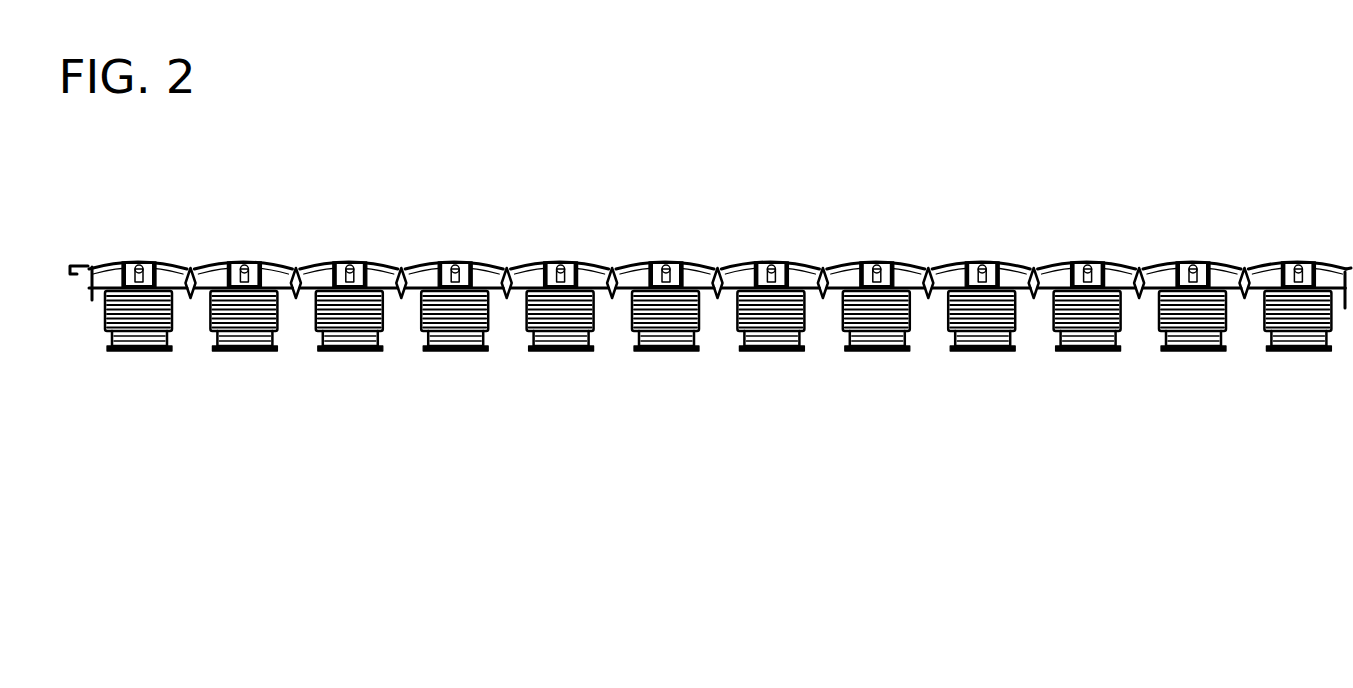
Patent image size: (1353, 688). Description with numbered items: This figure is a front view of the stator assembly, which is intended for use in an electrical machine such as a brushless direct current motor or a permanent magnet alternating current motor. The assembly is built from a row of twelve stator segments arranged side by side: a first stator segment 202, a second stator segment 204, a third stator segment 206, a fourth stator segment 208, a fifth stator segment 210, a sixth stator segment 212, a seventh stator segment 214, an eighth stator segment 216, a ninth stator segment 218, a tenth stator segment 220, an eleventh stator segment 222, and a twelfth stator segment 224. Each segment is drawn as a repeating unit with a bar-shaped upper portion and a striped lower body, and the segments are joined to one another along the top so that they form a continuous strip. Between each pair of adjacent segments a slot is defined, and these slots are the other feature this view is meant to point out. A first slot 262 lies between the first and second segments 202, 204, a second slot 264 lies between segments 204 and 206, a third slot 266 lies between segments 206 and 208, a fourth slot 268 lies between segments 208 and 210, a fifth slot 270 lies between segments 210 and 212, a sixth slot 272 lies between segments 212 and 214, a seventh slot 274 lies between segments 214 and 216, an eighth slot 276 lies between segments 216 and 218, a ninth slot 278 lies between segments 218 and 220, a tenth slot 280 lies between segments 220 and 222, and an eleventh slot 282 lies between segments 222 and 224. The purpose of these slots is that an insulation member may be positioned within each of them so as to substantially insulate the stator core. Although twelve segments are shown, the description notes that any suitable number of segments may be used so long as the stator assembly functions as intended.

The first stator segment 202 is at (143, 243).
The second stator segment 204 is at (248, 243).
The third stator segment 206 is at (354, 243).
The fourth stator segment 208 is at (459, 243).
The fifth stator segment 210 is at (565, 243).
The sixth stator segment 212 is at (670, 243).
The seventh stator segment 214 is at (775, 243).
The eighth stator segment 216 is at (881, 243).
The ninth stator segment 218 is at (986, 243).
The tenth stator segment 220 is at (1092, 243).
The eleventh stator segment 222 is at (1197, 243).
The twelfth stator segment 224 is at (1300, 253).
The first slot 262 is at (156, 369).
The second slot 264 is at (261, 369).
The third slot 266 is at (367, 369).
The fourth slot 268 is at (472, 369).
The fifth slot 270 is at (578, 369).
The sixth slot 272 is at (683, 369).
The seventh slot 274 is at (788, 369).
The eighth slot 276 is at (894, 369).
The ninth slot 278 is at (999, 369).
The tenth slot 280 is at (1105, 369).
The eleventh slot 282 is at (1210, 369).